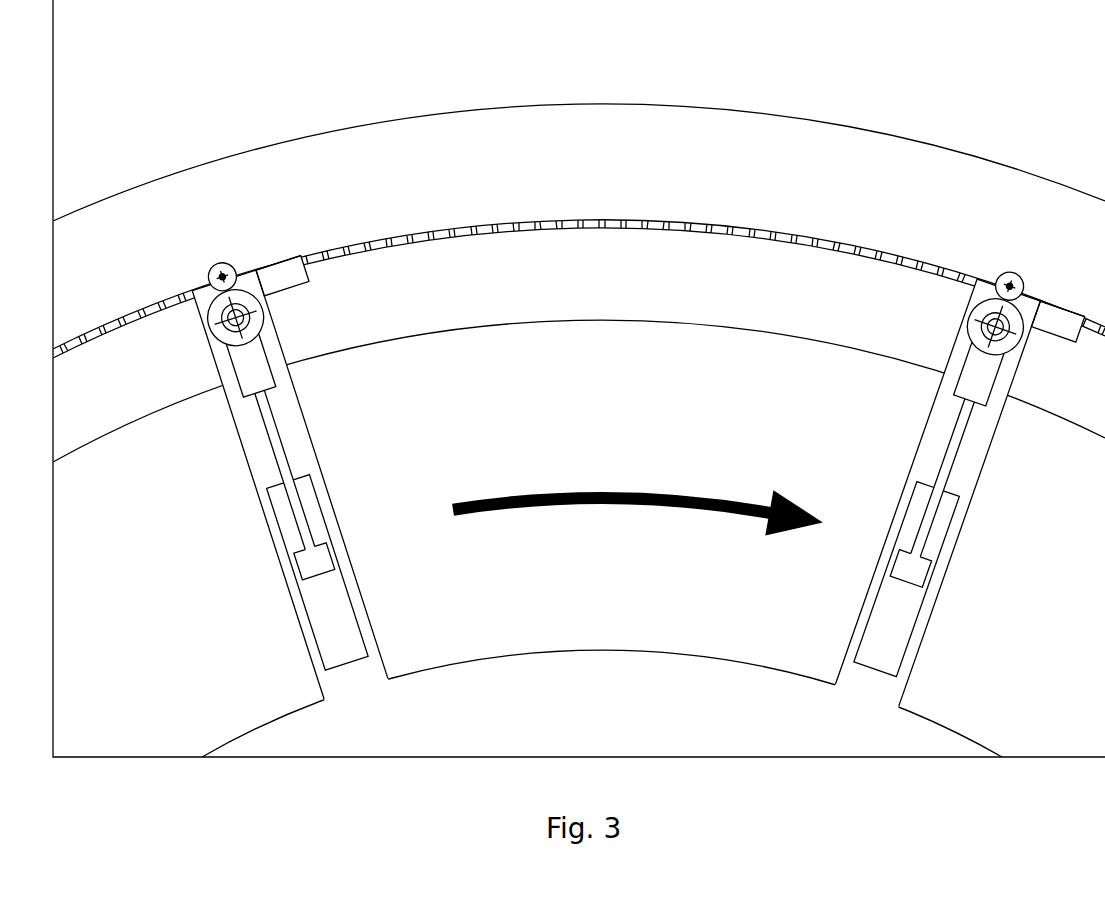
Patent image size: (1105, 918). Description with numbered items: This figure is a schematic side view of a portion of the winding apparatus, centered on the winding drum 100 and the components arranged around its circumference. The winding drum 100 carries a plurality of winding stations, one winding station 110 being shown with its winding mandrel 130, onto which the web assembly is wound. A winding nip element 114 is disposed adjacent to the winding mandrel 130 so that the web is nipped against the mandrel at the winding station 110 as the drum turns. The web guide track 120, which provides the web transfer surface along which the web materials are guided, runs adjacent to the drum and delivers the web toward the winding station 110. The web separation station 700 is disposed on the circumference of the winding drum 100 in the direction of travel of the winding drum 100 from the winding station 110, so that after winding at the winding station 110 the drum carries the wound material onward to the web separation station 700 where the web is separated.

The winding drum 100 is at (618, 432).
The winding station 110 is at (359, 411).
The winding nip element 114 is at (968, 335).
The web guide track 120 is at (583, 220).
The winding mandrel 130 is at (233, 267).
The web separation station 700 is at (293, 290).